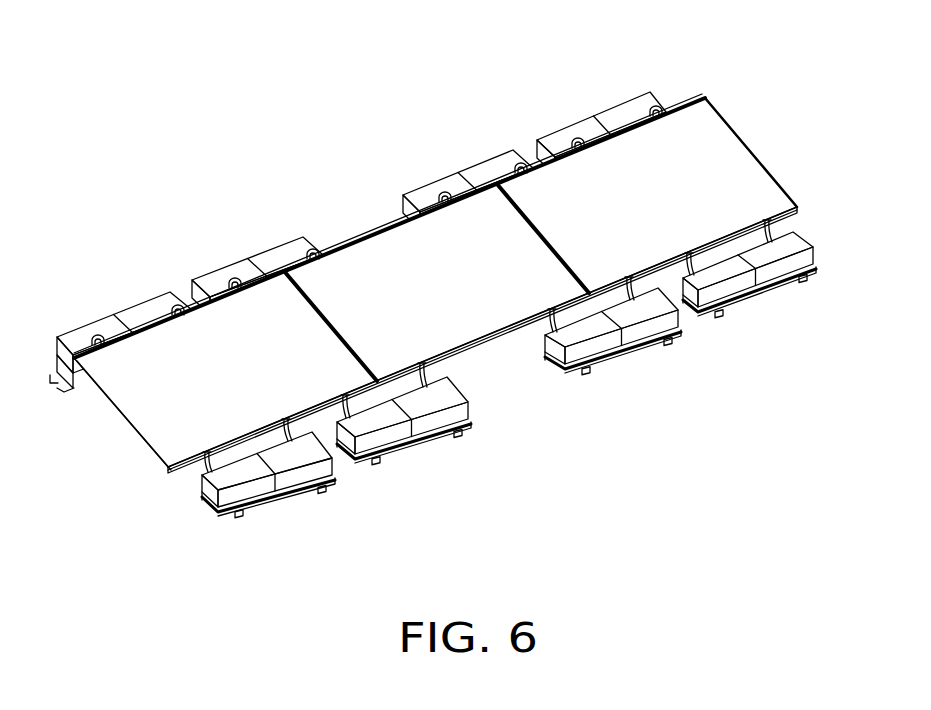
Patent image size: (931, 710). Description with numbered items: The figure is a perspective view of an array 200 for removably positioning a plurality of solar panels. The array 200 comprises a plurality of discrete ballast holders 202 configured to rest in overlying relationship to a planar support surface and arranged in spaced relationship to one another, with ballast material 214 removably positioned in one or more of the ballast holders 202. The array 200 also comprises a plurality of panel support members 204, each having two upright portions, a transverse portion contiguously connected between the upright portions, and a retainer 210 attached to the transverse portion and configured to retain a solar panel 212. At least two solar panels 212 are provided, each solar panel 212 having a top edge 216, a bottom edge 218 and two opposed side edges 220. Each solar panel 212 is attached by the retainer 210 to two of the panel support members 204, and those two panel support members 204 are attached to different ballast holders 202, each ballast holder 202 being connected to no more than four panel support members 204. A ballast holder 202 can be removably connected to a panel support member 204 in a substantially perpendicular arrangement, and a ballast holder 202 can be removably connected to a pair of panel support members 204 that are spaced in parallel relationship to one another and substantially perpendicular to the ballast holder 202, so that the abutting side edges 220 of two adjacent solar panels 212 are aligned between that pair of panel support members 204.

The array 200 is at (290, 92).
The discrete ballast holder 202 is at (425, 430).
The panel support member 204 is at (322, 247).
The retainer 210 is at (200, 463).
The solar panel 212 is at (218, 368).
The ballast material 214 is at (597, 343).
The top edge 216 is at (378, 233).
The bottom edge 218 is at (498, 334).
The side edge 220 is at (497, 188).